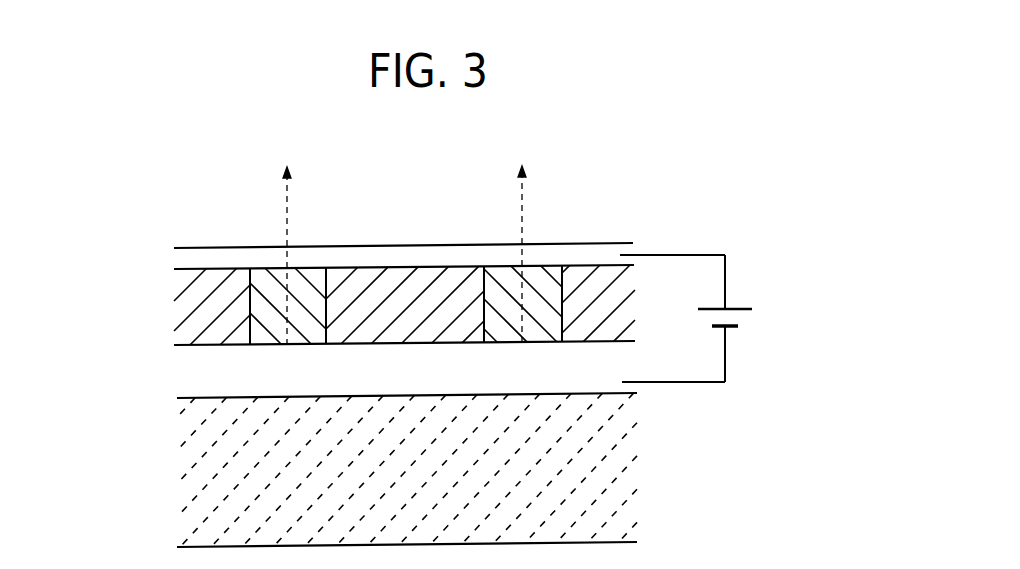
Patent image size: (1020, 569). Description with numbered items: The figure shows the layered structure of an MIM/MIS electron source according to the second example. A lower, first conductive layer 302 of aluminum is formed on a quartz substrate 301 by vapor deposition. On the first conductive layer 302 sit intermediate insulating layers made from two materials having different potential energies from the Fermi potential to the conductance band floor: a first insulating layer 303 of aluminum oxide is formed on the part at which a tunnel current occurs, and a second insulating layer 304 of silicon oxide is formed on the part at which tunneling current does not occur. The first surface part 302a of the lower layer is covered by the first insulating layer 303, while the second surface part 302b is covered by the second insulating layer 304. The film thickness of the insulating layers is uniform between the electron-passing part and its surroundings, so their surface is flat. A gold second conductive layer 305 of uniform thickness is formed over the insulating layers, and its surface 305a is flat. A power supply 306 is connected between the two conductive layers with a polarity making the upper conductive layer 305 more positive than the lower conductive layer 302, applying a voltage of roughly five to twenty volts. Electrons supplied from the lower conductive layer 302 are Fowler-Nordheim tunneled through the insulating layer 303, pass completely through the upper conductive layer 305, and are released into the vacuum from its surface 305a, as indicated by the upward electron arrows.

The quartz substrate 301 is at (187, 460).
The first conductive layer 302 is at (193, 373).
The first surface part 302a is at (290, 337).
The second surface part 302b is at (435, 345).
The first insulating layer 303 is at (275, 287).
The second insulating layer 304 is at (184, 302).
The second conductive layer 305 is at (597, 243).
The surface 305a is at (375, 247).
The power supply 306 is at (733, 317).